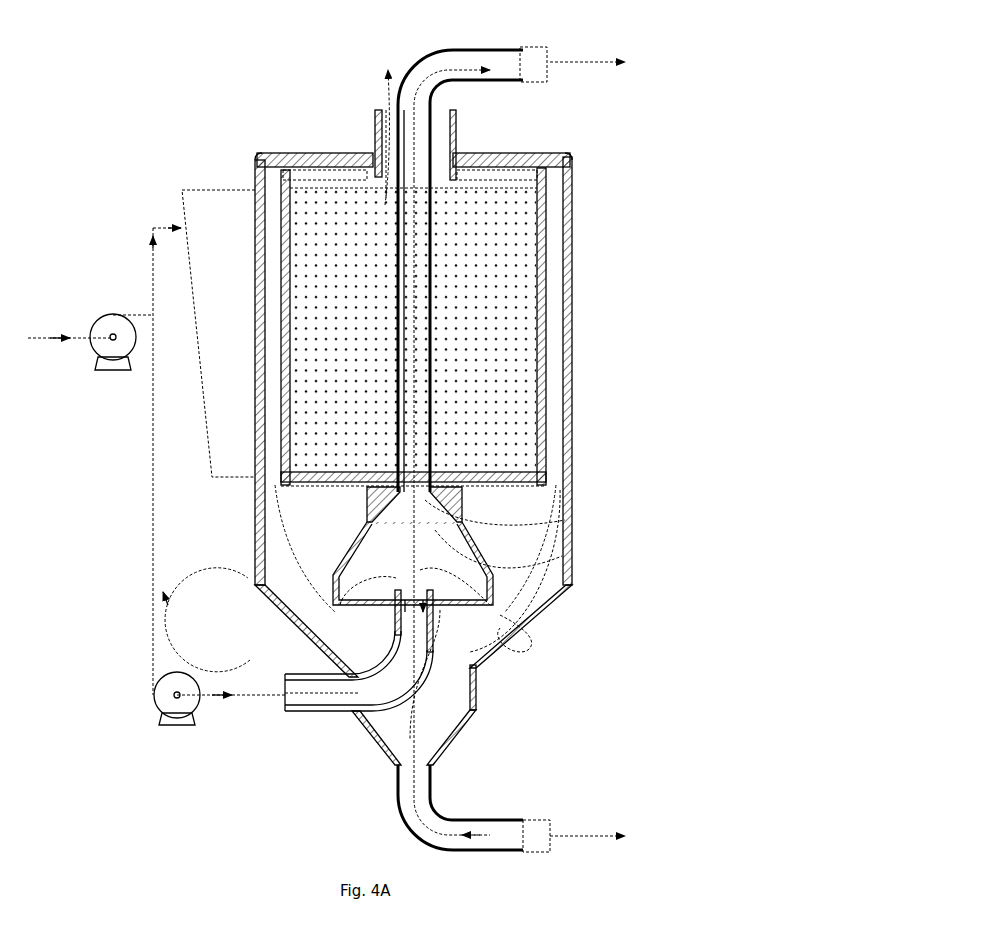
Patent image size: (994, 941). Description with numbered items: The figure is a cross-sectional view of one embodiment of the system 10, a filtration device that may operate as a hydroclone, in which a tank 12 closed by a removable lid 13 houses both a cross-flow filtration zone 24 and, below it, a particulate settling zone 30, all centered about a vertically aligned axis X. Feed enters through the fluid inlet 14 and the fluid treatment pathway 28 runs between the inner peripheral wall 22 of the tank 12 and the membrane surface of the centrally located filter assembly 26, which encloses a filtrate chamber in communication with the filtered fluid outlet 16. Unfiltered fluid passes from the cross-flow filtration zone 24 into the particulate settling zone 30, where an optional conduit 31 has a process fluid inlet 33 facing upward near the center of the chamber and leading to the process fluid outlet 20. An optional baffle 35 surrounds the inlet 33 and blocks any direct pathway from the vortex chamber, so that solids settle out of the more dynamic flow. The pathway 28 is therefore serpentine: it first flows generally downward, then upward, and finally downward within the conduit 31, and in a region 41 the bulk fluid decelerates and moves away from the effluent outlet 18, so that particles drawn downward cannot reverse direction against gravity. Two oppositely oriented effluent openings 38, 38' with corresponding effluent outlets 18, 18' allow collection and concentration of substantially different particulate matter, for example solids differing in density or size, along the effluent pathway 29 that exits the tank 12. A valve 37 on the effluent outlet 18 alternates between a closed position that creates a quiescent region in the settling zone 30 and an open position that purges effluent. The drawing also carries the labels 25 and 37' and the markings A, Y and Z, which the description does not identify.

The system 10 is at (644, 128).
The tank 12 is at (496, 660).
The removable lid 13 is at (302, 165).
The fluid inlet 14 is at (205, 190).
The filtered fluid outlet 16 is at (456, 148).
The effluent outlet 18 is at (511, 806).
The effluent outlet 18' is at (426, 123).
The process fluid outlet 20 is at (306, 712).
The inner peripheral wall 22 is at (497, 642).
The cross-flow filtration zone 24 is at (565, 250).
The left seal plate 25 is at (262, 172).
The filter assembly 26 is at (502, 158).
The fluid treatment pathway 28 is at (548, 200).
The effluent pathway 29 is at (466, 704).
The particulate settling zone 30 is at (556, 608).
The conduit 31 is at (375, 741).
The process fluid inlet 33 is at (546, 620).
The baffle 35 is at (496, 560).
The valve 37 is at (520, 852).
The top flange 37' is at (517, 45).
The effluent opening 38 is at (453, 677).
The effluent opening 38' is at (495, 502).
The region 41 is at (530, 630).
The swirl A is at (250, 650).
The axis X is at (420, 130).
The pump Y is at (98, 360).
The pump Z is at (156, 710).